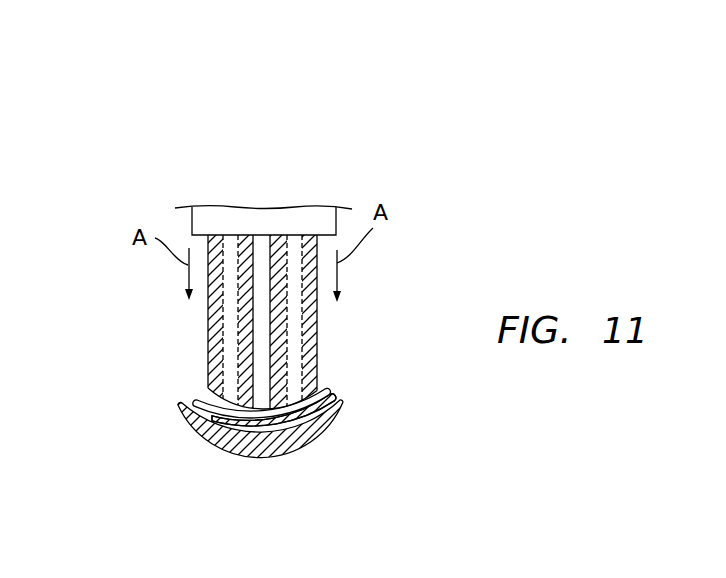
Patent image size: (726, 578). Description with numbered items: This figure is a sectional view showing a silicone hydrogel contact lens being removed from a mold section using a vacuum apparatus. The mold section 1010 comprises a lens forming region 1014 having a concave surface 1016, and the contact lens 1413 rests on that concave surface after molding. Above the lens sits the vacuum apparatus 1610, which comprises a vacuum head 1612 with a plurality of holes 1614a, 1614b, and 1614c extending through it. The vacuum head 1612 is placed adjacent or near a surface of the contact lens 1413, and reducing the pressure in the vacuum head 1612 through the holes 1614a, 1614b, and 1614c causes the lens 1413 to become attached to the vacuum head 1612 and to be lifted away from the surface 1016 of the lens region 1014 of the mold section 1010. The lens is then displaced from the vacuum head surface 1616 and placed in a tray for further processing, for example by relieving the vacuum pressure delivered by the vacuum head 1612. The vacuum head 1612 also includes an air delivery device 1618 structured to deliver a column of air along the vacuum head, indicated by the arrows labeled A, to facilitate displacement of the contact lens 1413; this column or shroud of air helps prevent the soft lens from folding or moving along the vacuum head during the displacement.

The mold section 1010 is at (300, 474).
The lens forming region 1014 is at (340, 435).
The concave surface 1016 is at (181, 401).
The contact lens 1413 is at (338, 384).
The vacuum head surface 1616 is at (328, 392).
The vacuum apparatus 1610 is at (174, 323).
The air delivery device 1618 is at (202, 217).
The hole 1614a is at (262, 245).
The hole 1614b is at (230, 240).
The hole 1614c is at (297, 240).
The vacuum head 1612 is at (320, 338).